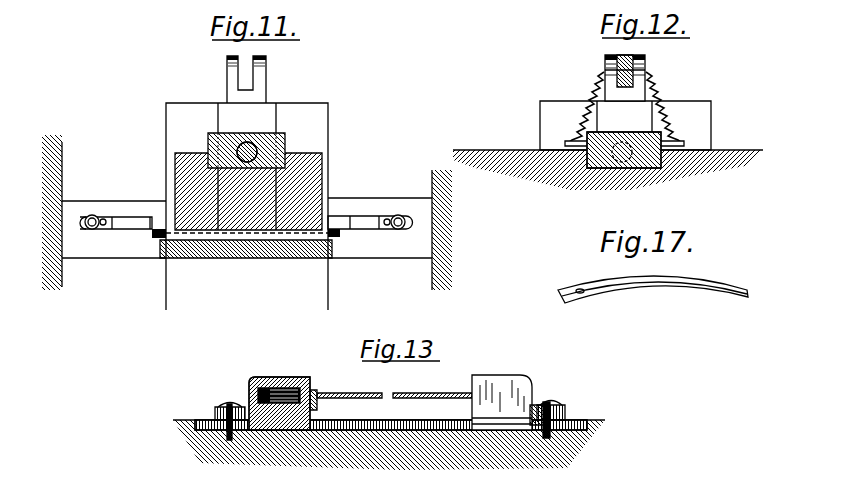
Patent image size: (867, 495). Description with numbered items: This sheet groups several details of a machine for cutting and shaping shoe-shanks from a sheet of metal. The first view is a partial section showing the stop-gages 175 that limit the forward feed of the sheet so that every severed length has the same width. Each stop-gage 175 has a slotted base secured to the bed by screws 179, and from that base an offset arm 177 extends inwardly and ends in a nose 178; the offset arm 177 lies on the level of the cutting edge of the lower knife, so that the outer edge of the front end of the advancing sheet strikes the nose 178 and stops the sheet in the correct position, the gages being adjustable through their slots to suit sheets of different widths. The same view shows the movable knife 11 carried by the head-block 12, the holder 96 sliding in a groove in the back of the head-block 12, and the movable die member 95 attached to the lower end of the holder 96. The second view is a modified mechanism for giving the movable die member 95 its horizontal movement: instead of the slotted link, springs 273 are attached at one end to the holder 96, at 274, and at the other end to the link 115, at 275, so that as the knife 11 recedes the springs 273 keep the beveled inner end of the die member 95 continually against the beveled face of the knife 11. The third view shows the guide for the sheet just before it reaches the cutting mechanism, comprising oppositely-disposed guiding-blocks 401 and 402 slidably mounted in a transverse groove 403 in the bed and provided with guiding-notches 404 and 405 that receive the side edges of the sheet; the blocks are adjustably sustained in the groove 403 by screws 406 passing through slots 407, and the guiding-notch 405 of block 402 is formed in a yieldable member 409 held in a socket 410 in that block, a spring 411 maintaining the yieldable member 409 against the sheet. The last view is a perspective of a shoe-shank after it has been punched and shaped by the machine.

In FIG. 11, the movable knife 11 is at (162, 260).
In FIG. 11, the head-block 12 is at (315, 160).
In FIG. 11, the movable die member 95 is at (182, 113).
In FIG. 12, the movable die member 95 is at (542, 112).
In FIG. 11, the holder 96 is at (283, 133).
In FIG. 12, the holder 96 is at (656, 168).
In FIG. 12, the link 115 is at (645, 63).
In FIG. 11, the stop-gage 175 is at (122, 218).
In FIG. 11, the offset arm 177 is at (143, 224).
In FIG. 11, the nose 178 is at (158, 240).
In FIG. 11, the screws 179 is at (92, 216).
In FIG. 12, the springs 273 is at (588, 100).
In FIG. 12, the spring attachment on holder 274 is at (568, 150).
In FIG. 12, the spring attachment on link 275 is at (606, 70).
In FIG. 13, the guiding-block 401 is at (512, 377).
In FIG. 13, the guiding-block 402 is at (265, 378).
In FIG. 13, the transverse groove 403 is at (410, 425).
In FIG. 13, the guiding-notch 404 is at (472, 393).
In FIG. 13, the guiding-notch 405 is at (317, 396).
In FIG. 13, the screws 406 is at (228, 403).
In FIG. 13, the slots 407 is at (213, 410).
In FIG. 13, the yieldable member 409 is at (310, 388).
In FIG. 13, the socket 410 is at (268, 408).
In FIG. 13, the spring 411 is at (258, 398).